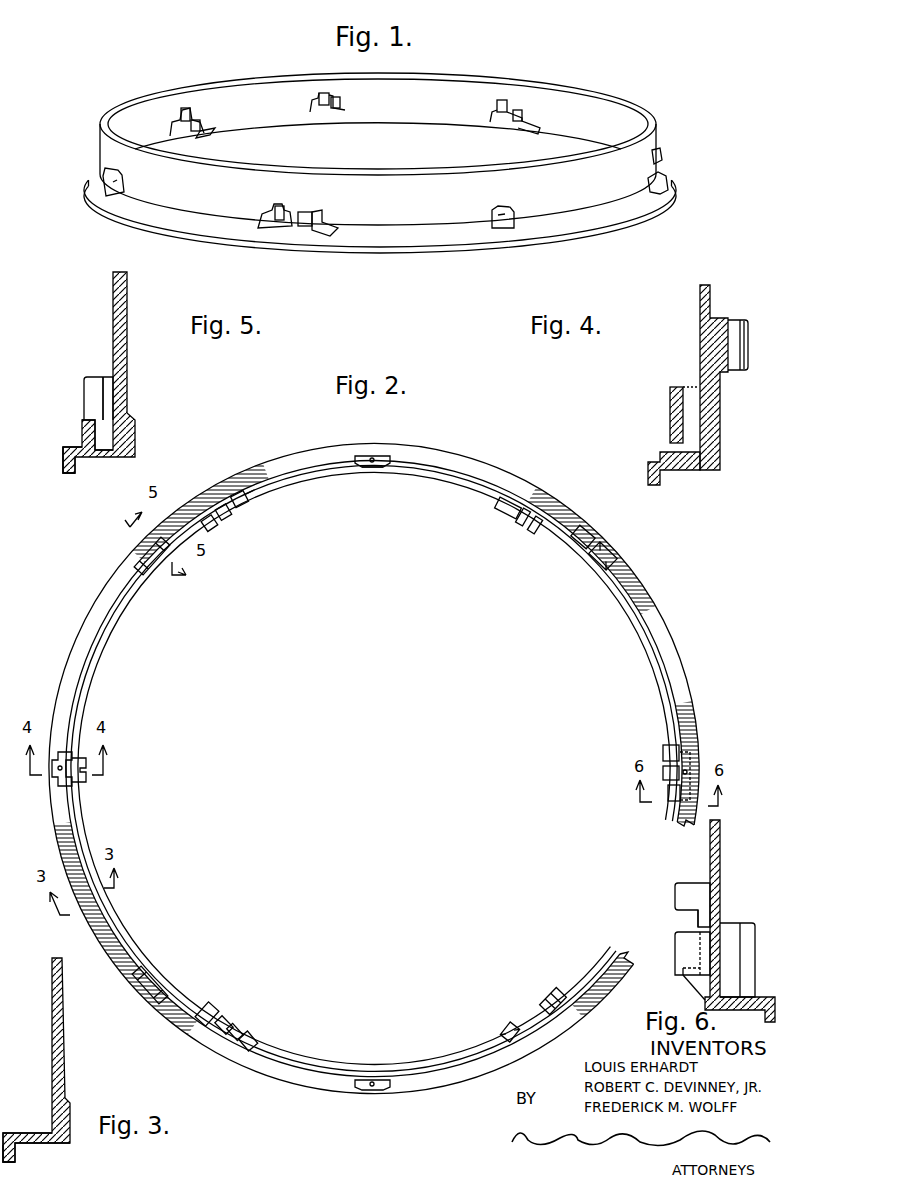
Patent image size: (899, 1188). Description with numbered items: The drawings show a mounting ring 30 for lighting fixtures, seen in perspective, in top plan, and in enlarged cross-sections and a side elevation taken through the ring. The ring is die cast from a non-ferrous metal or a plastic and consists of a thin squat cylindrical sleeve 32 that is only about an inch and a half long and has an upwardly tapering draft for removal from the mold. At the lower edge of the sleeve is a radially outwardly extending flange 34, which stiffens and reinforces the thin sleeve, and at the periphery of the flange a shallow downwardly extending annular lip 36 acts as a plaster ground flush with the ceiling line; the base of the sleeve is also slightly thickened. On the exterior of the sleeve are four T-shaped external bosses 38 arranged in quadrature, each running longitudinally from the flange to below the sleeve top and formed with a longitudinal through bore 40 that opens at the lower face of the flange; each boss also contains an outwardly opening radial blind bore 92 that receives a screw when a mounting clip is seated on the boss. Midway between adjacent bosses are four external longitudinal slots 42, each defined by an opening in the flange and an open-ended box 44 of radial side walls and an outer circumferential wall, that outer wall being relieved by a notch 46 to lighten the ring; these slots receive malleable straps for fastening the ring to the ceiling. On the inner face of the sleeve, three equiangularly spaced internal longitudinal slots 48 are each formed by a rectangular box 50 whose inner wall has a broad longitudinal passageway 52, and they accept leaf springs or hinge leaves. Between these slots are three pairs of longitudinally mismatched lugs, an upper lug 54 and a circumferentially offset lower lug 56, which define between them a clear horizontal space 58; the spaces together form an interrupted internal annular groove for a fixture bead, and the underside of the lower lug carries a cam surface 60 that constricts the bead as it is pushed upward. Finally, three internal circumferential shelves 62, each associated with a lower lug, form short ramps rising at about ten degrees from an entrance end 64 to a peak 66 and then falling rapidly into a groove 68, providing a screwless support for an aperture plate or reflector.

In FIG. 1, the mounting ring 30 is at (552, 80).
In FIG. 1, the cylindrical sleeve 32 is at (612, 112).
In FIG. 5, the cylindrical sleeve 32 is at (127, 318).
In FIG. 4, the cylindrical sleeve 32 is at (700, 298).
In FIG. 2, the cylindrical sleeve 32 is at (374, 769).
In FIG. 6, the cylindrical sleeve 32 is at (720, 832).
In FIG. 3, the cylindrical sleeve 32 is at (64, 1030).
In FIG. 1, the flange 34 is at (382, 240).
In FIG. 5, the flange 34 is at (80, 433).
In FIG. 3, the flange 34 is at (25, 1132).
In FIG. 5, the annular lip 36 is at (66, 473).
In FIG. 3, the annular lip 36 is at (15, 1152).
In FIG. 1, the external boss 38 is at (103, 182).
In FIG. 4, the external boss 38 is at (670, 394).
In FIG. 2, the external boss 38 is at (378, 455).
In FIG. 6, the external boss 38 is at (755, 940).
In FIG. 4, the longitudinal through bore 40 is at (690, 388).
In FIG. 2, the longitudinal through bore 40 is at (368, 455).
In FIG. 5, the external longitudinal slot 42 is at (108, 389).
In FIG. 2, the external longitudinal slot 42 is at (586, 532).
In FIG. 1, the open-ended box 44 is at (262, 214).
In FIG. 5, the open-ended box 44 is at (92, 377).
In FIG. 2, the open-ended box 44 is at (612, 562).
In FIG. 1, the notch 46 is at (305, 232).
In FIG. 1, the internal longitudinal slot 48 is at (325, 92).
In FIG. 4, the internal longitudinal slot 48 is at (737, 320).
In FIG. 2, the internal longitudinal slot 48 is at (520, 524).
In FIG. 1, the rectangular box 50 is at (318, 97).
In FIG. 4, the rectangular box 50 is at (748, 325).
In FIG. 2, the rectangular box 50 is at (537, 532).
In FIG. 2, the longitudinal passageway 52 is at (505, 518).
In FIG. 1, the upper lug 54 is at (186, 108).
In FIG. 2, the upper lug 54 is at (668, 745).
In FIG. 6, the upper lug 54 is at (690, 883).
In FIG. 1, the lower lug 56 is at (203, 124).
In FIG. 2, the lower lug 56 is at (668, 768).
In FIG. 6, the lower lug 56 is at (675, 952).
In FIG. 6, the clear horizontal space 58 is at (697, 918).
In FIG. 6, the cam surface 60 is at (700, 998).
In FIG. 1, the internal circumferential shelf 62 is at (540, 126).
In FIG. 2, the internal circumferential shelf 62 is at (210, 1004).
In FIG. 6, the internal circumferential shelf 62 is at (685, 977).
In FIG. 2, the entrance end 64 is at (248, 500).
In FIG. 2, the peak 66 is at (240, 508).
In FIG. 2, the groove 68 is at (227, 1016).
In FIG. 1, the radial blind bore 92 is at (505, 220).
In FIG. 4, the radial blind bore 92 is at (666, 455).